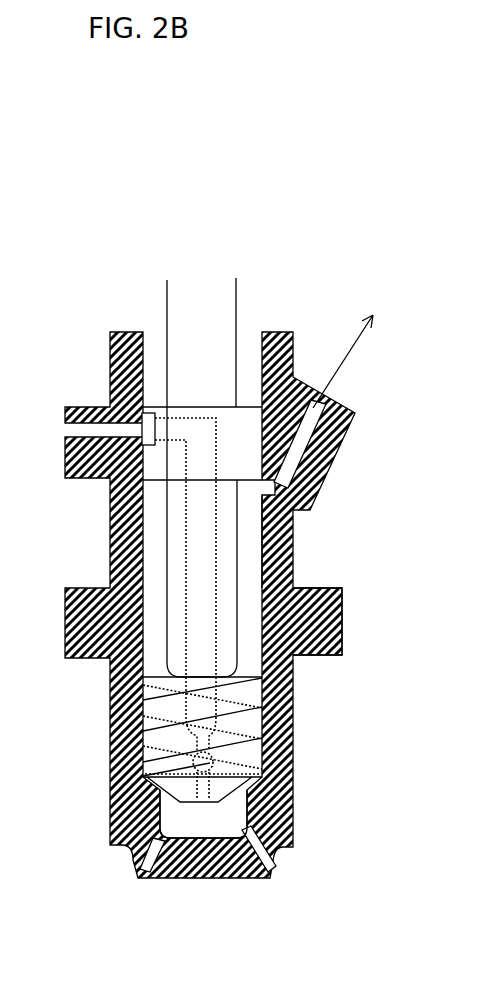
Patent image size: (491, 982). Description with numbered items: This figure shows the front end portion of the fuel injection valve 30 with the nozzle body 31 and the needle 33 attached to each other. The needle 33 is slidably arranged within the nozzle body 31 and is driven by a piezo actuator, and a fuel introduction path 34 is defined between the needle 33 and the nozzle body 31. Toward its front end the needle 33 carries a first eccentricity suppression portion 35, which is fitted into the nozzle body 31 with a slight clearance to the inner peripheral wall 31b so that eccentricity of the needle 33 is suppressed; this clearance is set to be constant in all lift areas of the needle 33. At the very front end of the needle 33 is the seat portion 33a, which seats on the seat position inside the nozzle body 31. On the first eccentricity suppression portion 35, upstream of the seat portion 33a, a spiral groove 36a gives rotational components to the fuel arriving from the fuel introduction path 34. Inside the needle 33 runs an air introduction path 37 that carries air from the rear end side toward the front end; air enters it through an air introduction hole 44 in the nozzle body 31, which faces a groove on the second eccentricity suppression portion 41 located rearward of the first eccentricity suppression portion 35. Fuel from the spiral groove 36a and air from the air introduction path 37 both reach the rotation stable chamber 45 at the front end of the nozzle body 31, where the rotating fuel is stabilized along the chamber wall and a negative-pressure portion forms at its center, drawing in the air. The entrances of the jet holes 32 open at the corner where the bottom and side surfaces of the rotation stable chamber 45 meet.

The fuel injection valve 30 is at (233, 585).
The nozzle body 31 is at (296, 790).
The inner peripheral wall 31b is at (262, 528).
The jet holes 32 is at (142, 865).
The needle 33 is at (228, 304).
The seat portion 33a is at (142, 781).
The fuel introduction path 34 is at (153, 563).
The first eccentricity suppression portion 35 is at (275, 668).
The spiral groove 36a is at (139, 728).
The air introduction path 37 is at (235, 576).
The second eccentricity suppression portion 41 is at (158, 405).
The air introduction hole 44 is at (78, 425).
The rotation stable chamber 45 is at (160, 816).